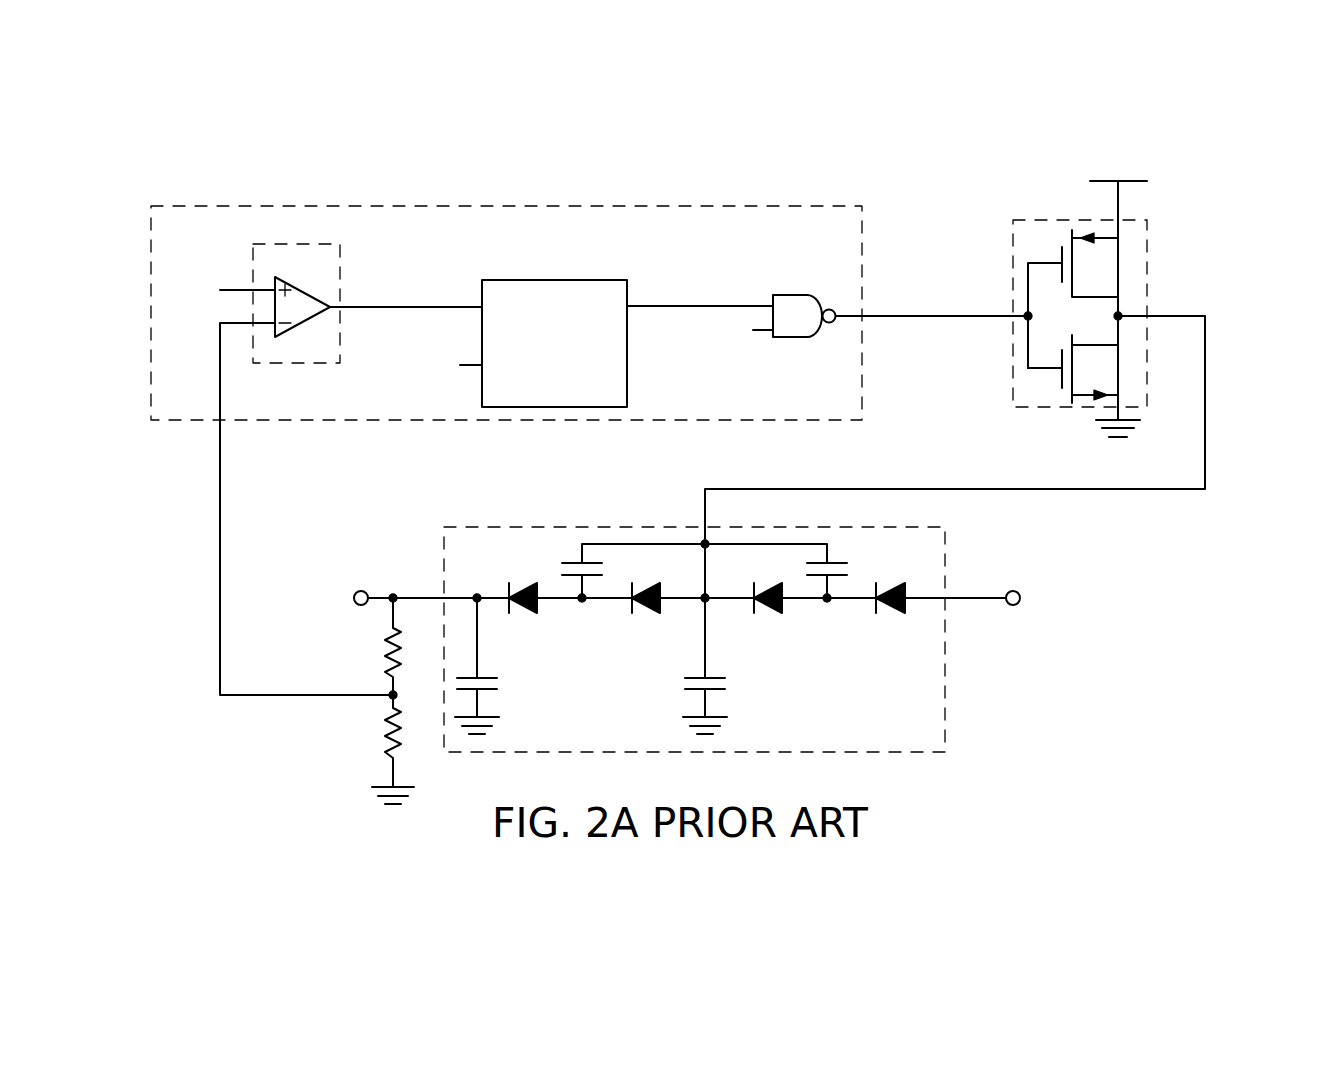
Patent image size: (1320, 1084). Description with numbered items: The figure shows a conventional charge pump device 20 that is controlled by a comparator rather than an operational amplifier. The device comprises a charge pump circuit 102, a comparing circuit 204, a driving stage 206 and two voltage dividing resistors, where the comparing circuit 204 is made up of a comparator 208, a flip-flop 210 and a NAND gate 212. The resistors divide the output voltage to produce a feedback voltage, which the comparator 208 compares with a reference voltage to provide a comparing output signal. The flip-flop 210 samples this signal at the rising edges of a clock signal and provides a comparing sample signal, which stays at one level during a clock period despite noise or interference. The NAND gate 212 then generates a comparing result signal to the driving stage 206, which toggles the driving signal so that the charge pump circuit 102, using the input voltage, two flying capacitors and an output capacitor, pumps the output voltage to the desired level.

The charge pump device 20 is at (1178, 110).
The charge pump circuit 102 is at (945, 560).
The comparing circuit 204 is at (835, 207).
The driving stage 206 is at (1147, 255).
The comparator 208 is at (340, 244).
The flip-flop 210 is at (580, 280).
The NAND gate 212 is at (790, 295).